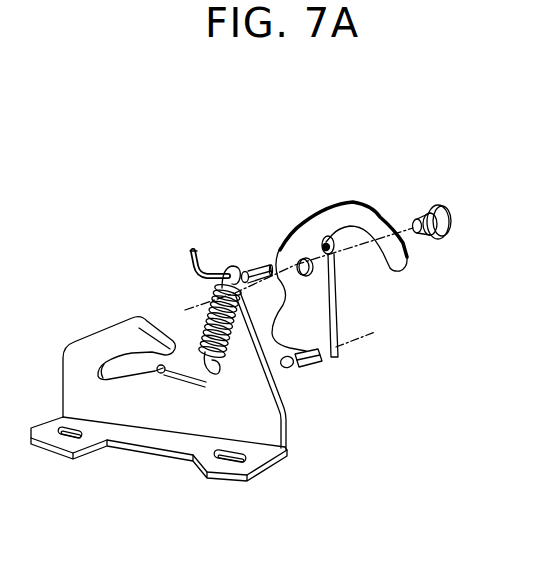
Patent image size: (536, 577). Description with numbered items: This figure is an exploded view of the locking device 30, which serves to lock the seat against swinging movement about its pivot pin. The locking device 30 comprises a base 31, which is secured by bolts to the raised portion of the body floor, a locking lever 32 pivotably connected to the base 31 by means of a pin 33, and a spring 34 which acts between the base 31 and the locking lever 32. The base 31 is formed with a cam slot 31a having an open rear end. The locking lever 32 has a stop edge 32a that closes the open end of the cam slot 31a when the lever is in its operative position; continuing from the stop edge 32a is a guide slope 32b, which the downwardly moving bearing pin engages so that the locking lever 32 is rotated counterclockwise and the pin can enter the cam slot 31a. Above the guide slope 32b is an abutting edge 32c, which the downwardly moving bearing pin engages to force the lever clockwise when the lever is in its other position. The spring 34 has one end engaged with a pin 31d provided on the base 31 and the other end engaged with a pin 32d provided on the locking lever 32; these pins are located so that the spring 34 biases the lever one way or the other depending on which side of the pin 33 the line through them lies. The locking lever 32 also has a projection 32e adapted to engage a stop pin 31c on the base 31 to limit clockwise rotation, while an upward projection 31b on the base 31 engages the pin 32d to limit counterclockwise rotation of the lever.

The locking device 30 is at (242, 165).
The base 31 is at (193, 397).
The cam slot 31a is at (150, 378).
The upward projection 31b is at (195, 250).
The stop pin 31c is at (306, 363).
The pin 31d is at (204, 365).
The locking lever 32 is at (343, 257).
The stop edge 32a is at (340, 352).
The guide slope 32b is at (260, 458).
The abutting edge 32c is at (283, 247).
The pin 32d is at (247, 265).
The projection 32e is at (332, 365).
The pin 33 is at (438, 242).
The spring 34 is at (207, 322).